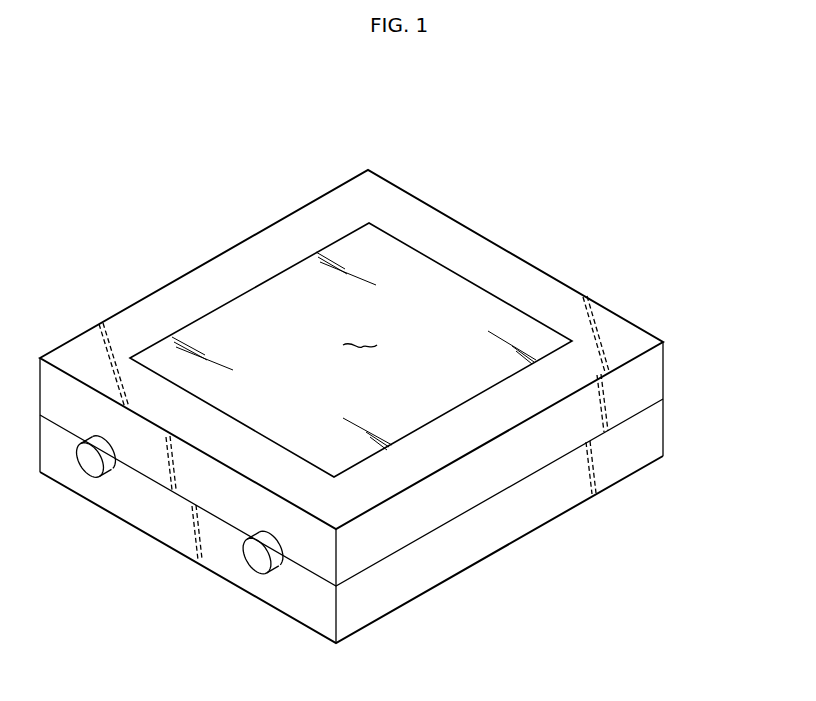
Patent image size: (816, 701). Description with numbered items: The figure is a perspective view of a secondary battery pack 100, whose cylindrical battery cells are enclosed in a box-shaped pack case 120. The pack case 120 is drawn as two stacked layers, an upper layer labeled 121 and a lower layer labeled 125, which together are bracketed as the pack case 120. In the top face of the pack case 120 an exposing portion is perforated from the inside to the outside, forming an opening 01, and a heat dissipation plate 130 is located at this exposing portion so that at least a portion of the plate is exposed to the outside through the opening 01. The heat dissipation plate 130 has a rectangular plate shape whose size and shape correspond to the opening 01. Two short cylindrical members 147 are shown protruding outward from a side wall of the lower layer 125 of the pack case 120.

The secondary battery pack 100 is at (183, 99).
The pack case 120 is at (719, 352).
The first housing portion 121 is at (650, 371).
The second housing portion 125 is at (650, 428).
The heat dissipation plate 130 is at (293, 297).
The opening 01 is at (362, 343).
The protruding member 147 is at (91, 460).